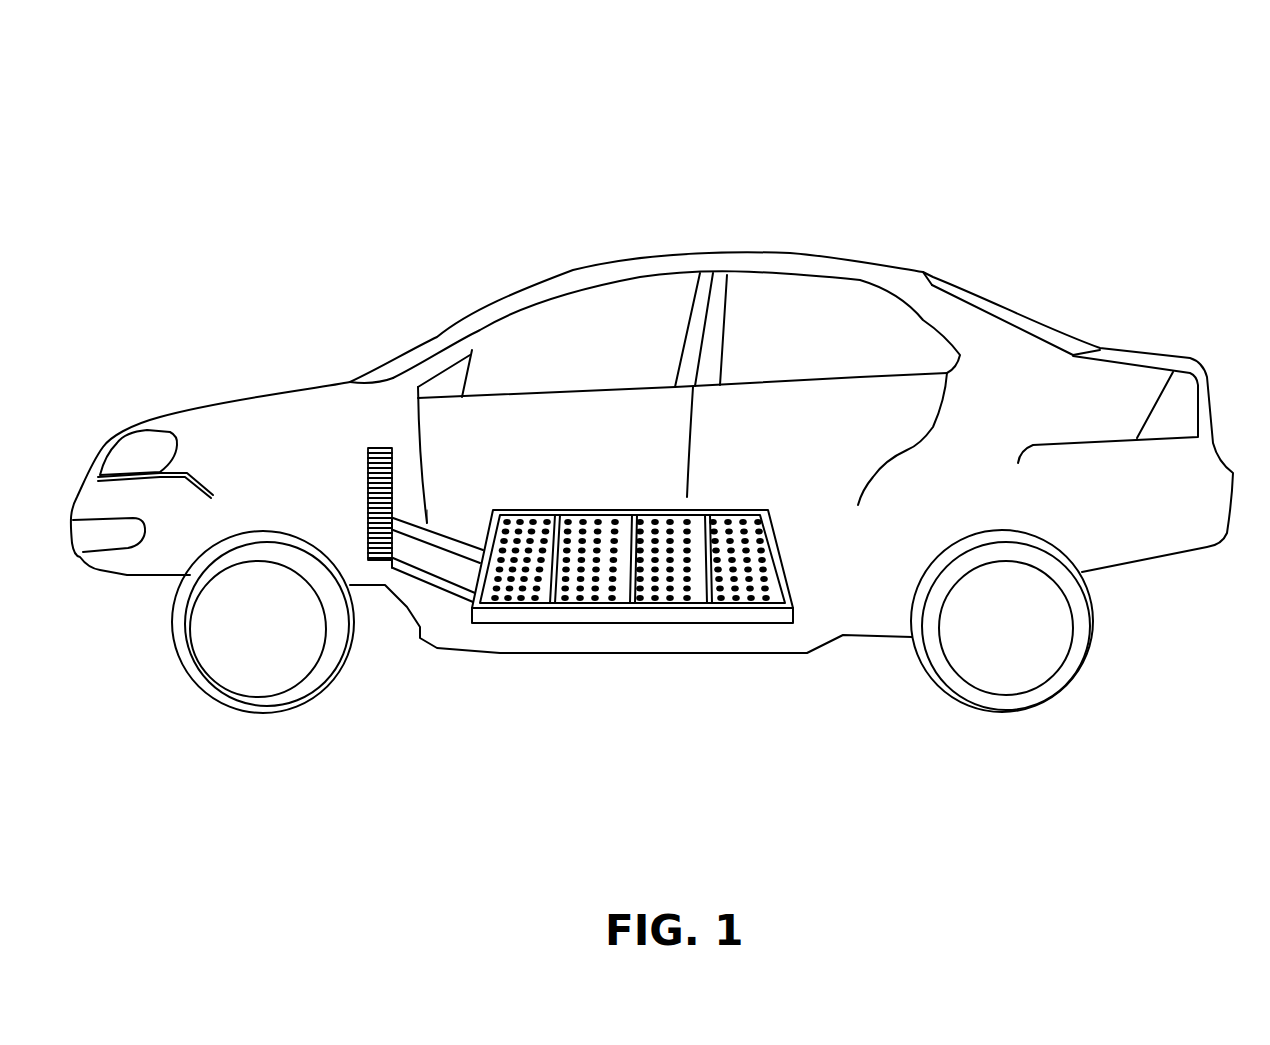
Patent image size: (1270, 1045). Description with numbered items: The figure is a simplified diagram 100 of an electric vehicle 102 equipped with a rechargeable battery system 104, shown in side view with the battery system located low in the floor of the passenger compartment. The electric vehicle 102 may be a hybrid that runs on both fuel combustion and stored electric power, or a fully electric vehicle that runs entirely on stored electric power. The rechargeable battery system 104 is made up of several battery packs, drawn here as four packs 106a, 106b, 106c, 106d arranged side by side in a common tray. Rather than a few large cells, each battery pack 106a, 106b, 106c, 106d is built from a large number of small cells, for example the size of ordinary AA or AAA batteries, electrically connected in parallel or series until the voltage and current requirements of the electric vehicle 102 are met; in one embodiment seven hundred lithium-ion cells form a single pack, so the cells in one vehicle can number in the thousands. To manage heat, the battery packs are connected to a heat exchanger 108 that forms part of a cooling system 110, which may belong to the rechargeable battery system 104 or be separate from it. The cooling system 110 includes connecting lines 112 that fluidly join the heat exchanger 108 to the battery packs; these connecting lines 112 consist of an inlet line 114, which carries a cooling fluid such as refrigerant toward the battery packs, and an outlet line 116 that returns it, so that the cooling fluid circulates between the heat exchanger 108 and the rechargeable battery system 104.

The simplified diagram 100 is at (1218, 115).
The electric vehicle 102 is at (717, 252).
The rechargeable battery system 104 is at (633, 623).
The battery pack 106a is at (512, 513).
The battery pack 106b is at (588, 513).
The battery pack 106c is at (688, 513).
The battery pack 106d is at (762, 513).
The heat exchanger 108 is at (368, 463).
The cooling system 110 is at (440, 463).
The connecting lines 112 is at (440, 602).
The inlet line 114 is at (437, 533).
The outlet line 116 is at (430, 580).